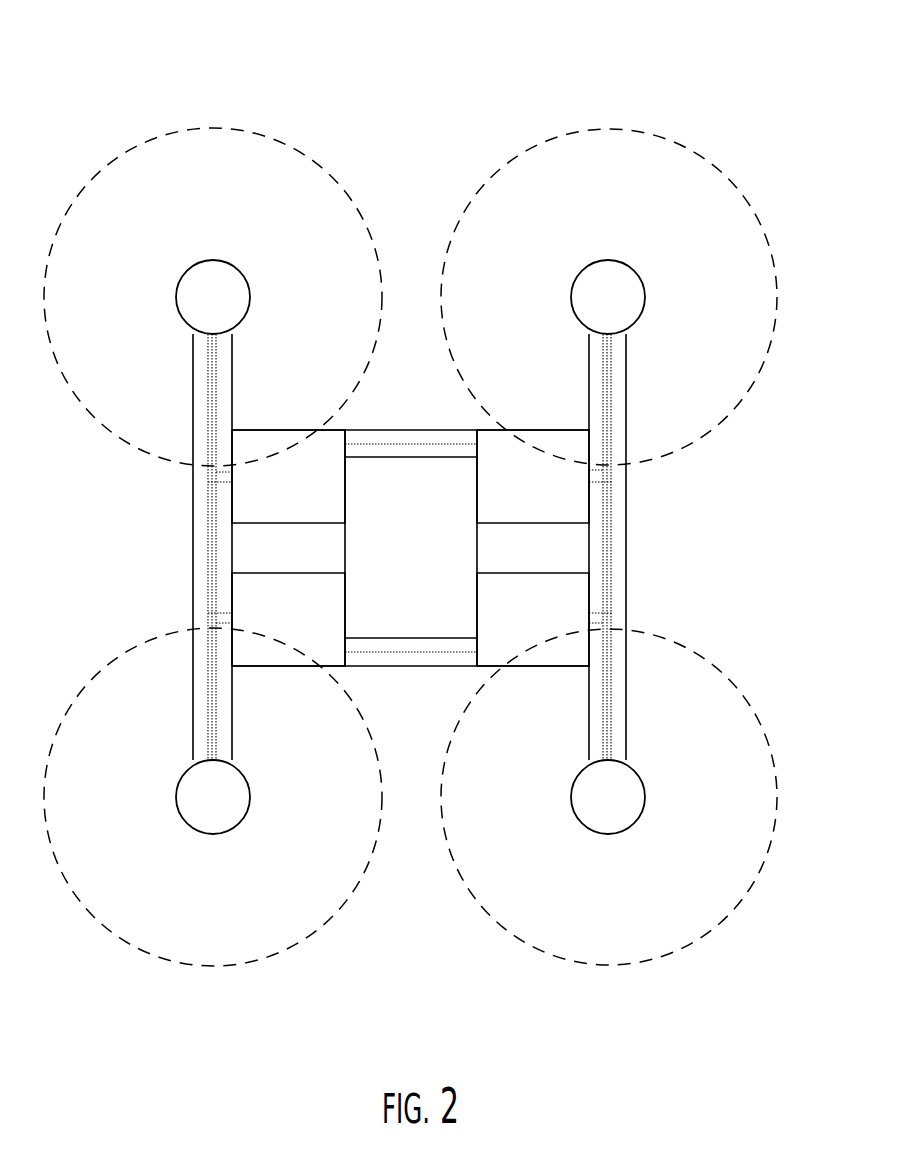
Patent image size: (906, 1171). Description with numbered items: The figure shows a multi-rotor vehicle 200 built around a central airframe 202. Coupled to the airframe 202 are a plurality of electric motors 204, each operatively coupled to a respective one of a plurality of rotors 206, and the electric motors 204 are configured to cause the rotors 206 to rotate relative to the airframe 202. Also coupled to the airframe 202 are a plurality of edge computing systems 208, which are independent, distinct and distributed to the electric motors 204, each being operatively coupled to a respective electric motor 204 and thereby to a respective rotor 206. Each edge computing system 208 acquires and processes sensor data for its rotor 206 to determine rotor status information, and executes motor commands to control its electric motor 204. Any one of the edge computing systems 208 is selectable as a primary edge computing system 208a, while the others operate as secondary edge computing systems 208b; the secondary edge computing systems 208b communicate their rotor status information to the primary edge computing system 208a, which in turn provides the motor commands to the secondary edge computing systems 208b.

The multi-rotor vehicle 200 is at (401, 59).
The airframe 202 is at (426, 569).
The electric motors 204 is at (187, 273).
The rotors 206 is at (168, 138).
The edge computing systems 208 is at (166, 529).
The primary edge computing system 208a is at (311, 503).
The secondary edge computing systems 208b is at (311, 646).